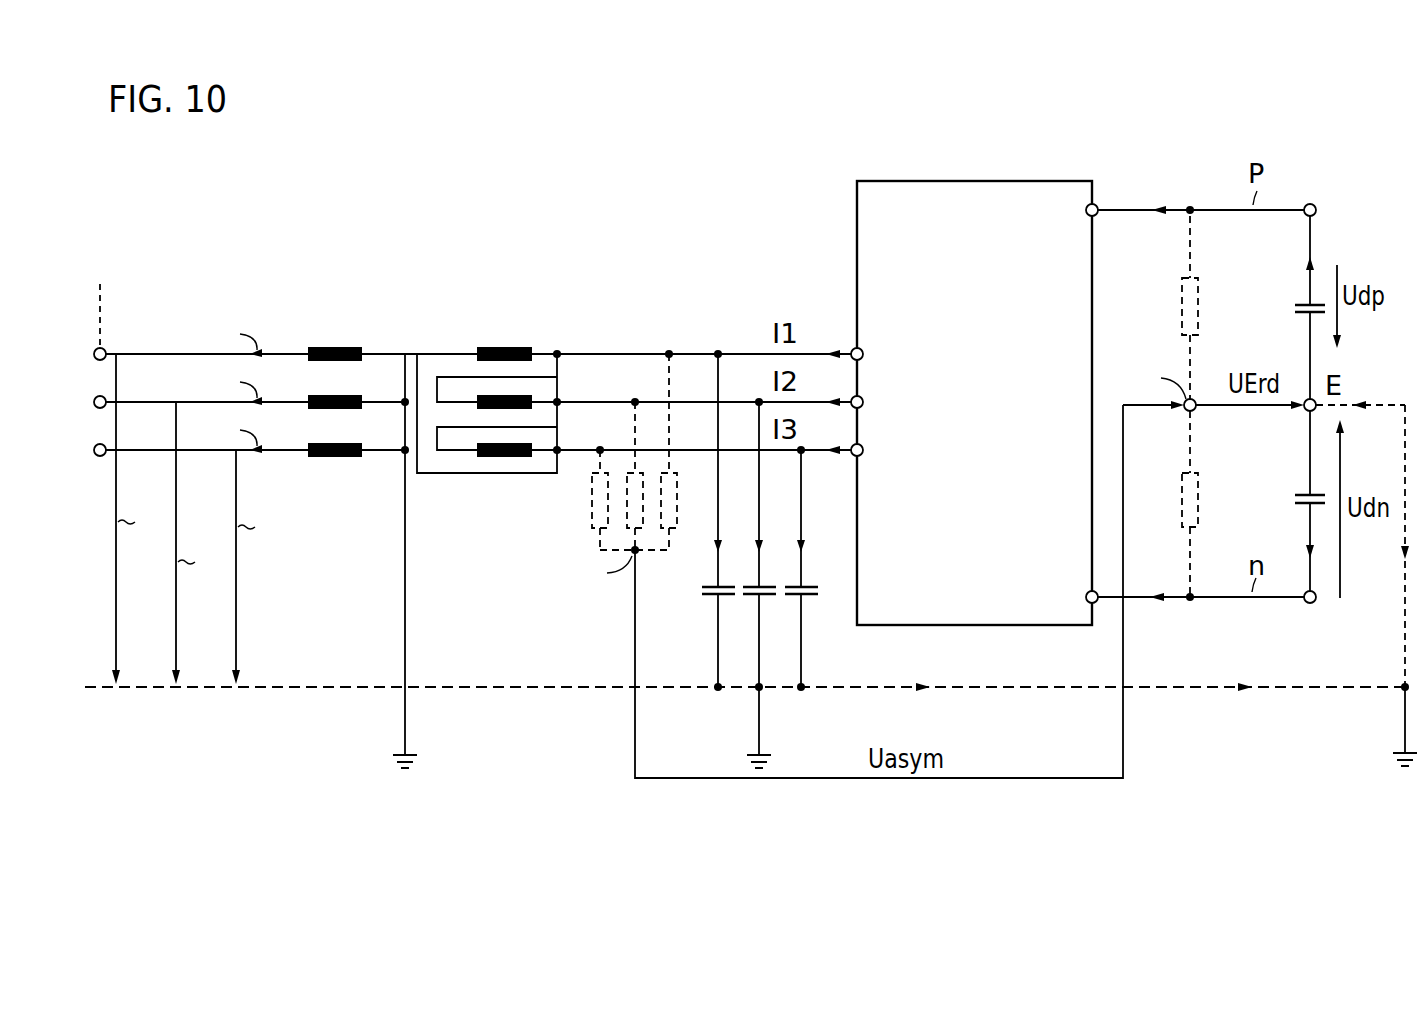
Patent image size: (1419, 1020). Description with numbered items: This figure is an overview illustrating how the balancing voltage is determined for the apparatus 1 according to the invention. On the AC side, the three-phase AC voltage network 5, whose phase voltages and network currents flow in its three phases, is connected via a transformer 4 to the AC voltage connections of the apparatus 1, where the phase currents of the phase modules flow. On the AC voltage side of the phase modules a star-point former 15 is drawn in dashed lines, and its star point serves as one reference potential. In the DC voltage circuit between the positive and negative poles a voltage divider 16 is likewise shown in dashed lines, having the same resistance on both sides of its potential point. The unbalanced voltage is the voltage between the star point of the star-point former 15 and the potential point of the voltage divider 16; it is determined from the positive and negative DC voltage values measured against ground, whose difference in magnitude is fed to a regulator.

The apparatus 1 is at (717, 228).
The transformer 4 is at (411, 322).
The three-phase AC voltage network 5 is at (181, 262).
The star-point former 15 is at (563, 511).
The voltage divider 16 is at (1196, 412).